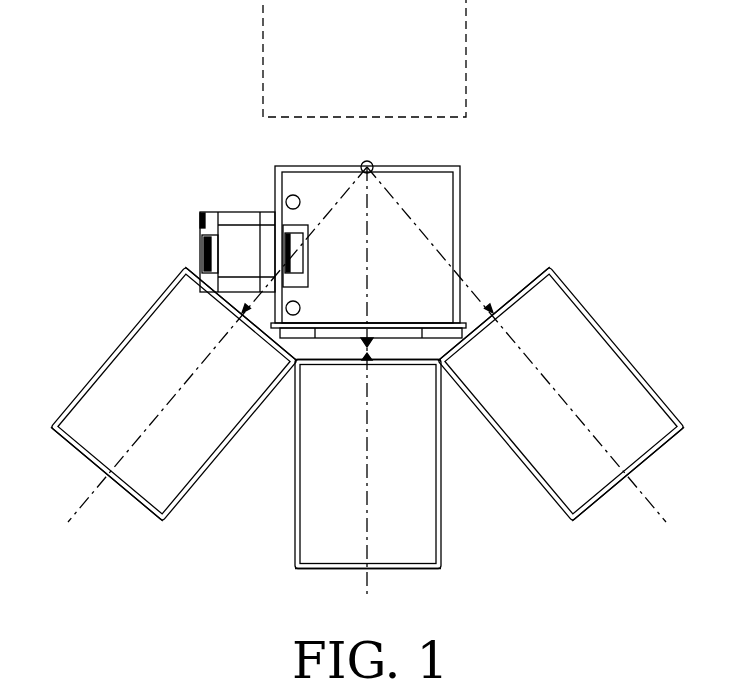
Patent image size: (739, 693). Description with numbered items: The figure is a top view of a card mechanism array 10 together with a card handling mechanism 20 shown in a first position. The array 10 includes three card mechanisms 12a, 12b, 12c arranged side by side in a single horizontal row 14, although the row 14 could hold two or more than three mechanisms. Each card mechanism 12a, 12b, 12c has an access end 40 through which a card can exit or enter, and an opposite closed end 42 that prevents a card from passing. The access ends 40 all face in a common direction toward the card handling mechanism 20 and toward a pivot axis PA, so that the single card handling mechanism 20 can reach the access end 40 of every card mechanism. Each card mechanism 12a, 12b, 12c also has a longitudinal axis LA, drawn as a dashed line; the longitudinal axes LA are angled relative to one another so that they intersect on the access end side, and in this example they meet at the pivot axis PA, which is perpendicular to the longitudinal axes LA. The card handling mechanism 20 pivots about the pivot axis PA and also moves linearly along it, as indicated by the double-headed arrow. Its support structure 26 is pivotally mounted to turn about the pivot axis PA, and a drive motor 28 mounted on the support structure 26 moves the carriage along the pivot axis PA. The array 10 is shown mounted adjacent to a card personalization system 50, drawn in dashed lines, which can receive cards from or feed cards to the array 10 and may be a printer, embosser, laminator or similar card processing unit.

The card mechanism array 10 is at (612, 180).
The card mechanism 12a is at (627, 371).
The card mechanism 12b is at (420, 548).
The card mechanism 12c is at (97, 402).
The horizontal row 14 is at (564, 388).
The card handling mechanism 20 is at (204, 160).
The support structure 26 is at (445, 217).
The drive motor 28 is at (242, 238).
The access end 40 is at (270, 342).
The closed end 42 is at (143, 507).
The card personalization system 50 is at (466, 53).
The pivot axis PA is at (372, 163).
The longitudinal axis LA is at (373, 399).